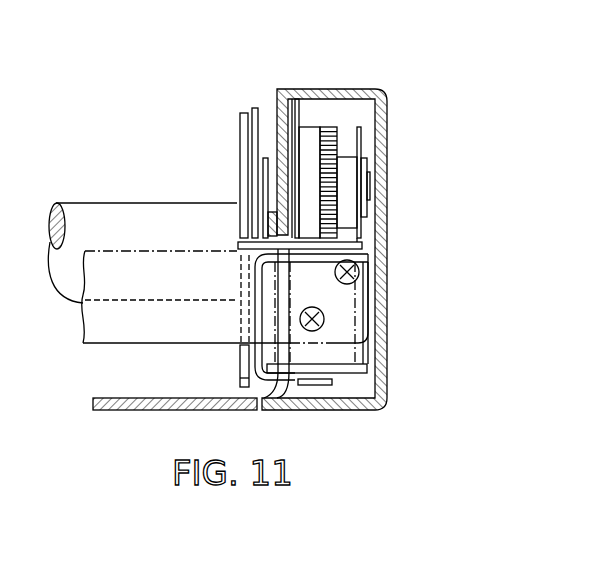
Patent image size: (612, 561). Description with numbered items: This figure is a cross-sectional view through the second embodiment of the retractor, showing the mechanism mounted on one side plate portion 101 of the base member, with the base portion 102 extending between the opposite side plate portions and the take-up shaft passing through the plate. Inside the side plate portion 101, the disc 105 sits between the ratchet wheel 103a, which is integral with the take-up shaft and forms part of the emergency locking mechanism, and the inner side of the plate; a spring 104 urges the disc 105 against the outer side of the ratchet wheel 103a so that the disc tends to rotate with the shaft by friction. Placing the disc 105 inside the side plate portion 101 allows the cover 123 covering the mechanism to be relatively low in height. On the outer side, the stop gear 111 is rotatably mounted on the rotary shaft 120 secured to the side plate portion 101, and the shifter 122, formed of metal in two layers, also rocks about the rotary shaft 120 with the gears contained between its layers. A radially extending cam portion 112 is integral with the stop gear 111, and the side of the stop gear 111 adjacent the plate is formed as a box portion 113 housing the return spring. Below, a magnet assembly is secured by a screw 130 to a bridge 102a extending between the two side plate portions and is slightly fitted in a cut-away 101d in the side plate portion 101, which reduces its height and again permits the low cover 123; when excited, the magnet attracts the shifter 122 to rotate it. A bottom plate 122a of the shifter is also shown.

The side plate portion 101 is at (278, 90).
The cut-away 101d is at (293, 384).
The base portion 102 is at (143, 409).
The bridge 102a is at (157, 345).
The ratchet wheel 103a is at (243, 147).
The spring 104 is at (267, 198).
The disc 105 is at (256, 126).
The stop gear 111 is at (330, 127).
The cam portion 112 is at (342, 162).
The box portion 113 is at (311, 127).
The rotary shaft 120 is at (367, 183).
The shifter 122 is at (298, 117).
The bottom plate 122a is at (348, 240).
The cover 123 is at (386, 201).
The screw 130 is at (340, 282).